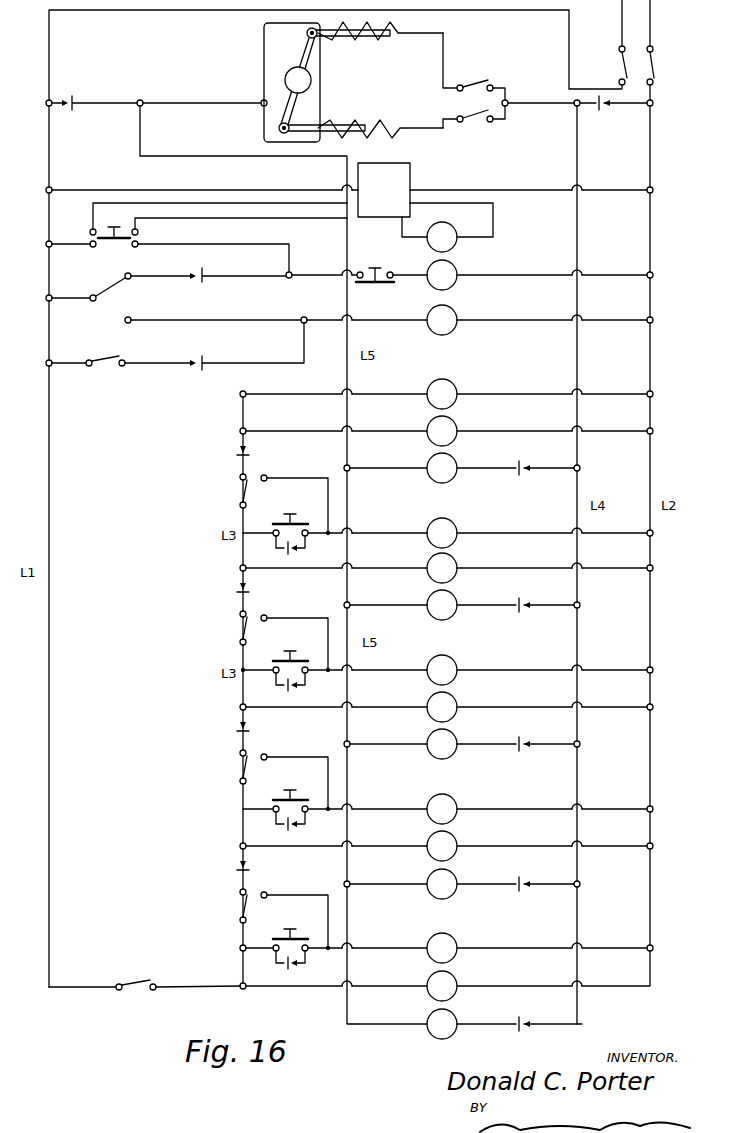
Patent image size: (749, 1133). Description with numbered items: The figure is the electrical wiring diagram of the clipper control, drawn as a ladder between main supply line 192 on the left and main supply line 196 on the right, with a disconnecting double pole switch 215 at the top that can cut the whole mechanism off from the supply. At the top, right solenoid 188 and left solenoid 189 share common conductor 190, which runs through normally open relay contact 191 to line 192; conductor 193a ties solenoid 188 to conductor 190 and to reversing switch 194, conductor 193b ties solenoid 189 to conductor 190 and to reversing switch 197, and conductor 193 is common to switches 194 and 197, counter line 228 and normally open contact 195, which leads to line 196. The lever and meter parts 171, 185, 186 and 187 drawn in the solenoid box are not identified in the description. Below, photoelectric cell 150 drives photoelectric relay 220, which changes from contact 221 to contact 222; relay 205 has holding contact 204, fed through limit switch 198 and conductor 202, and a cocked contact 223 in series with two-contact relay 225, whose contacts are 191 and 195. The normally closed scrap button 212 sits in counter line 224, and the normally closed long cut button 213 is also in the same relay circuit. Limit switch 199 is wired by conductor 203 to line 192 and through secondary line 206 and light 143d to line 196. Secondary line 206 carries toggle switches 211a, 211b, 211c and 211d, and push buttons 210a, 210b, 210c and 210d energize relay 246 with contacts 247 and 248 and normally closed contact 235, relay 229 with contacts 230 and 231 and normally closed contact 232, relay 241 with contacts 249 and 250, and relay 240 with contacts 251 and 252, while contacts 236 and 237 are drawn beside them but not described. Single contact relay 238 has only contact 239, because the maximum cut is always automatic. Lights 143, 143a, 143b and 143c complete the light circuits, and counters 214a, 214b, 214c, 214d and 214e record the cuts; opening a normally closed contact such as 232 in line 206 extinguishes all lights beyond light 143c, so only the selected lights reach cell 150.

The main supply line 192 is at (90, 10).
The counter line 228 is at (588, 180).
The main supply line 196 is at (652, 165).
The counter line 224 is at (349, 356).
The disconnecting double pole switch 215 is at (660, 68).
The relay normally open contact 195 is at (616, 122).
The relay normally open contact 191 is at (70, 112).
The common conductor 190 is at (222, 103).
The solenoid valve unit 171 is at (292, 82).
The pivoted lever 185 is at (308, 36).
The left solenoid plunger 186 is at (320, 48).
The right solenoid plunger 187 is at (312, 118).
The left solenoid 189 is at (396, 22).
The right solenoid 188 is at (398, 133).
The conductor 193b is at (264, 34).
The conductor 193a is at (264, 128).
The reversing switch 197 is at (480, 76).
The reversing switch 194 is at (478, 130).
The conductor 193 is at (530, 103).
The photoelectric cell 150 is at (410, 184).
The photoelectric relay 220 is at (458, 244).
The scrap button 212 is at (90, 230).
The contact 221 is at (132, 272).
The relay contact 223 is at (199, 286).
The long cut button 213 is at (384, 276).
The relay 225 is at (457, 272).
The contact 222 is at (132, 314).
The relay 205 is at (457, 318).
The limit switch 198 is at (100, 368).
The conductor 202 is at (158, 368).
The relay contact 204 is at (199, 374).
The single contact relay 238 is at (457, 391).
The light 143 is at (457, 427).
The counter 214e is at (452, 480).
The relay contact 239 is at (522, 476).
The contact 4R3 237 is at (250, 460).
The toggle switch 211d is at (240, 490).
The push button 210d is at (304, 516).
The relay contact 251 is at (296, 553).
The three-contact relay 240 is at (457, 530).
The light 143a is at (457, 565).
The counter 214d is at (452, 618).
The relay contact 252 is at (524, 614).
The contact 3R3 236 is at (250, 597).
The toggle switch 211c is at (240, 628).
The secondary line 206 is at (242, 664).
The push button 210c is at (304, 654).
The relay contact 249 is at (296, 690).
The three-contact relay 241 is at (457, 667).
The light 143b is at (457, 704).
The counter 214c is at (452, 757).
The relay contact 250 is at (524, 753).
The relay normally closed contact 232 is at (250, 736).
The toggle switch 211b is at (240, 768).
The push button 210b is at (304, 794).
The relay contact 230 is at (296, 829).
The three-contact relay 229 is at (457, 806).
The light 143c is at (457, 843).
The counter 214b is at (452, 897).
The relay contact 231 is at (524, 893).
The relay normally closed contact 235 is at (250, 875).
The toggle switch 211a is at (240, 907).
The push button 210a is at (304, 933).
The relay contact 247 is at (296, 968).
The three-contact relay 246 is at (457, 945).
The light 143d is at (457, 983).
The counter 214a is at (452, 1037).
The relay contact 248 is at (524, 1031).
The limit switch 199 is at (136, 995).
The conductor 203 is at (178, 986).